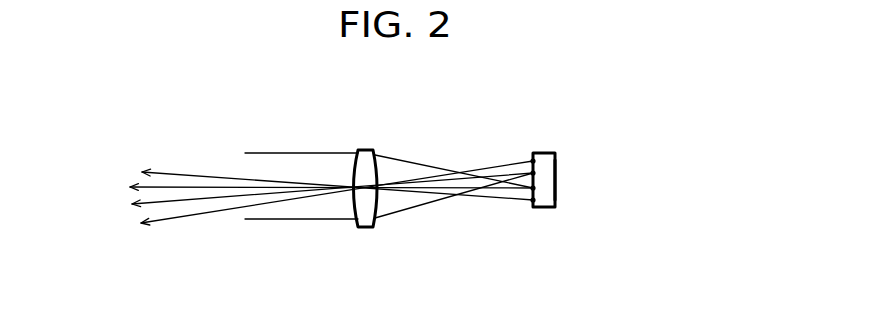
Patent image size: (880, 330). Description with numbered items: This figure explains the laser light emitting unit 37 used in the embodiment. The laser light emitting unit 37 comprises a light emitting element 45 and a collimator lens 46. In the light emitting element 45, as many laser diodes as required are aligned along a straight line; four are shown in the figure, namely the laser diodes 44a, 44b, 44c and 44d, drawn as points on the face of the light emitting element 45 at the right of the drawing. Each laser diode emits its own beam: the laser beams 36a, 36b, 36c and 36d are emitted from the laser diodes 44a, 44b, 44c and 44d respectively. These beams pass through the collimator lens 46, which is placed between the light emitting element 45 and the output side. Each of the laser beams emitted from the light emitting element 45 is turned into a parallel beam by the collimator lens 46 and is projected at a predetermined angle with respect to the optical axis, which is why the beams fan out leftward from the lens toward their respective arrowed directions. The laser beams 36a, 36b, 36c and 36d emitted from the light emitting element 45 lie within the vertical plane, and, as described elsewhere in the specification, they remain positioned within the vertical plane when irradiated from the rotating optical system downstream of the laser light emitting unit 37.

The laser beam 36a is at (208, 215).
The laser beam 36b is at (178, 212).
The laser beam 36c is at (178, 199).
The laser beam 36d is at (167, 171).
The laser light emitting unit 37 is at (583, 168).
The laser diode 44a is at (532, 161).
The laser diode 44b is at (531, 174).
The laser diode 44c is at (531, 189).
The laser diode 44d is at (532, 201).
The light emitting element 45 is at (555, 188).
The collimator lens 46 is at (368, 150).